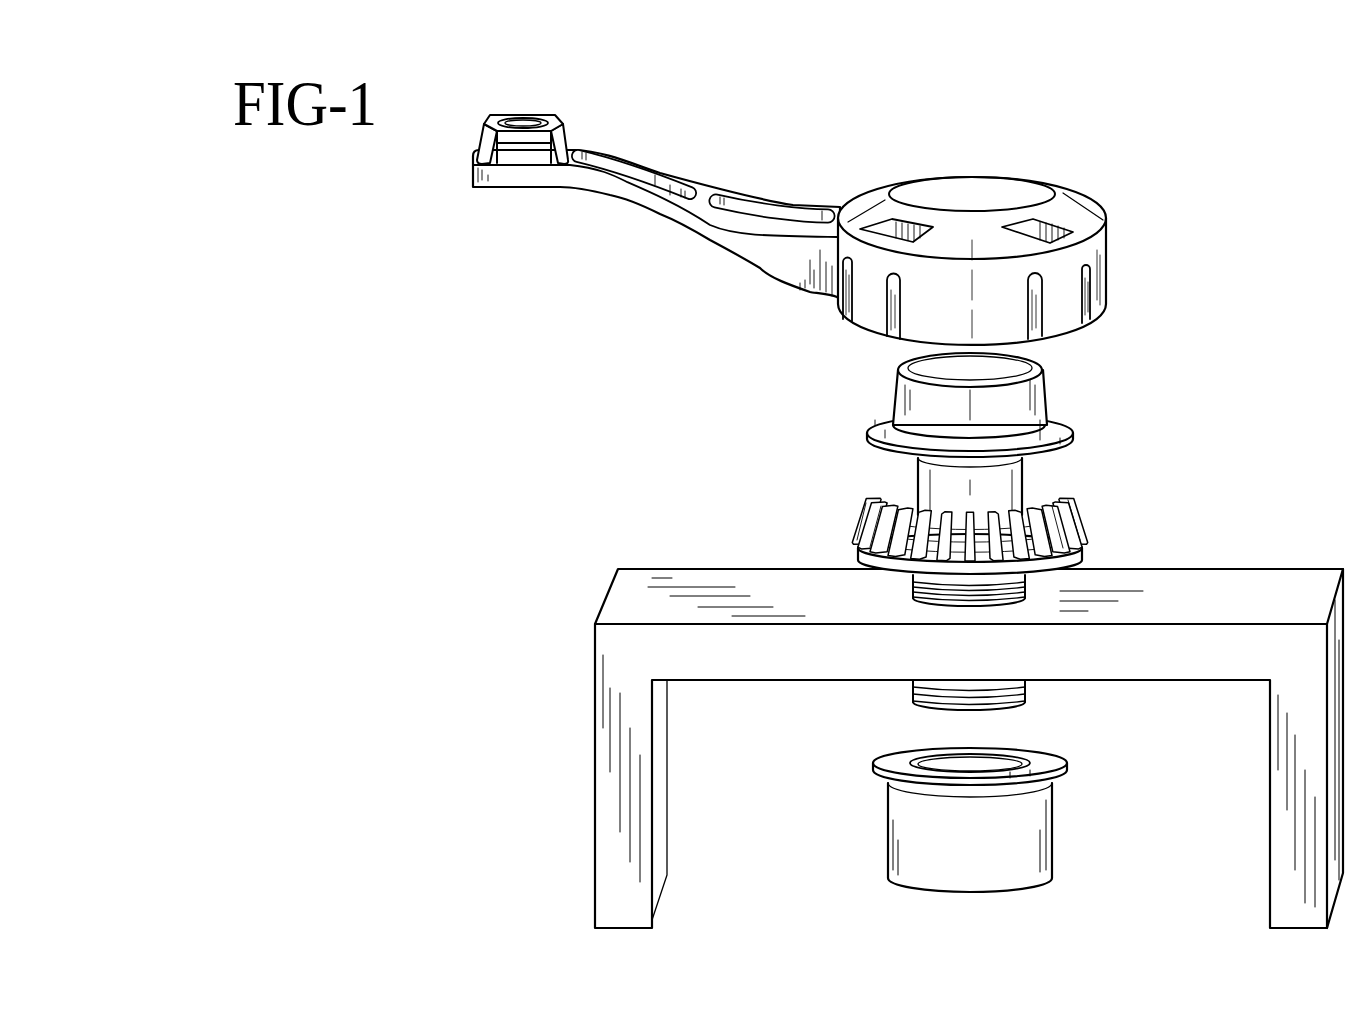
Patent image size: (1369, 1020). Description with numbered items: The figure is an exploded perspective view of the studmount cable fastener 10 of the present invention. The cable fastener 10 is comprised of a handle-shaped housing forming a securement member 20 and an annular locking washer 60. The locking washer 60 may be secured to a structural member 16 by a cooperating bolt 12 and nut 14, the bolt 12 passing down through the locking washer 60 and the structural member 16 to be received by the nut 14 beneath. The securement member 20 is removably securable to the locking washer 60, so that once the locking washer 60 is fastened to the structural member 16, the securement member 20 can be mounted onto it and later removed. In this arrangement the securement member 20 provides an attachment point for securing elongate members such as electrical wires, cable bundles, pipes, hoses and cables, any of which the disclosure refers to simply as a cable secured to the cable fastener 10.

The studmount cable fastener 10 is at (1152, 187).
The bolt 12 is at (894, 392).
The nut 14 is at (1052, 828).
The structural member 16 is at (618, 568).
The securement member 20 is at (1016, 172).
The locking washer 60 is at (818, 513).